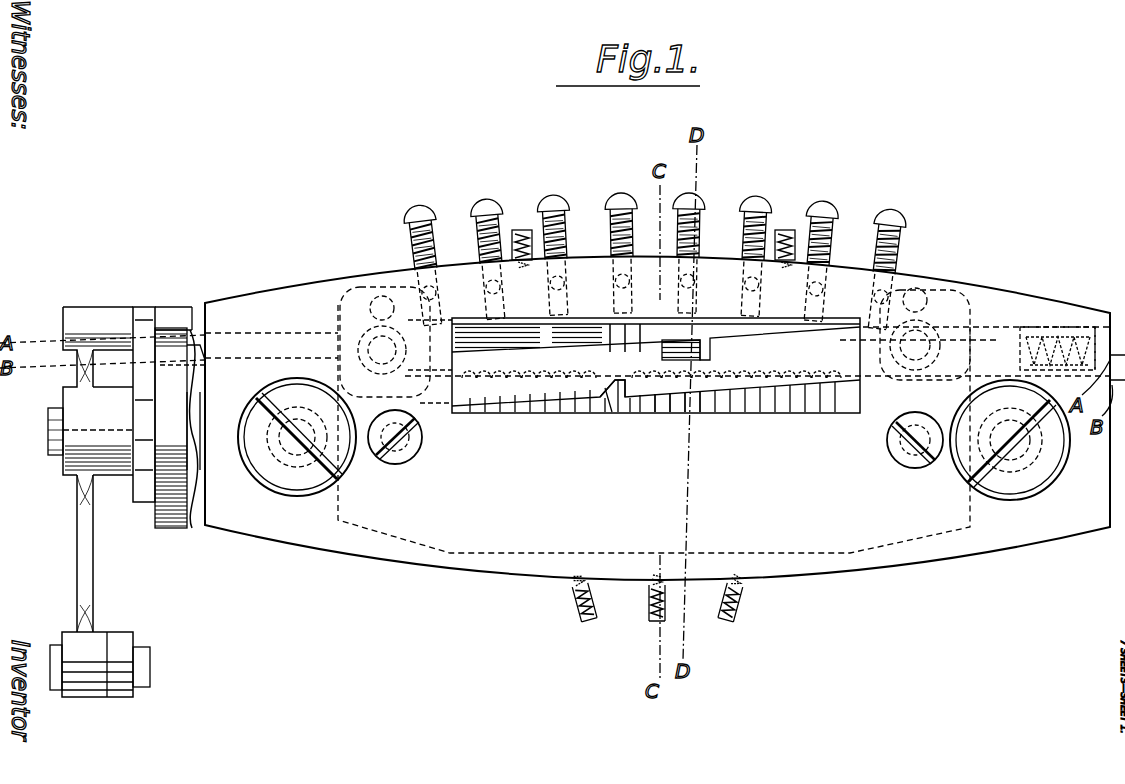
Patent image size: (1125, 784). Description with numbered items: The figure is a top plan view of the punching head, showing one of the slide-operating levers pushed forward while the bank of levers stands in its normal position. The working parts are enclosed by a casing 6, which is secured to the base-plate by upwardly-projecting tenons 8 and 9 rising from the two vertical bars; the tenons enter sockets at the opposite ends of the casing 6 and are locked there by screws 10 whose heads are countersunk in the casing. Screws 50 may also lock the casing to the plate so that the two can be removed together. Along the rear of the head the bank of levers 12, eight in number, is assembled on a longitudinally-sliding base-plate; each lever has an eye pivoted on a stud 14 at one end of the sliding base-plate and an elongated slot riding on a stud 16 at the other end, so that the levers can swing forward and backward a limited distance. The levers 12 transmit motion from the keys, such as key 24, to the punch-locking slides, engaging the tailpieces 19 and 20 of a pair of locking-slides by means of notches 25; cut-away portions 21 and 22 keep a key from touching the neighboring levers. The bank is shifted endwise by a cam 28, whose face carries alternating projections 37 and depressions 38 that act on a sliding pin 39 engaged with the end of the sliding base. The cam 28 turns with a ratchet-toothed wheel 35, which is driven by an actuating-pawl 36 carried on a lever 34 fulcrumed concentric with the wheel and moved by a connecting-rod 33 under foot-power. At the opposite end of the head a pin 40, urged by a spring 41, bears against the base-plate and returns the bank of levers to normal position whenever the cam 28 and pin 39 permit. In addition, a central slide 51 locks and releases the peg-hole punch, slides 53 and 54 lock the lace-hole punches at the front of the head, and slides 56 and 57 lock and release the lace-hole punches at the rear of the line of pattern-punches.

The casing 6 is at (562, 418).
The tenon 8 is at (300, 470).
The tenon 9 is at (1020, 465).
The screws 10 is at (275, 470).
The slide-operating levers 12 is at (656, 365).
The stud 14 is at (918, 372).
The stud 16 is at (340, 326).
The tailpiece 19 is at (661, 412).
The tailpiece 20 is at (690, 410).
The cut-away portion 21 is at (704, 350).
The cut-away portion 22 is at (556, 341).
The key 24 is at (698, 210).
The notch 25 is at (620, 410).
The cam 28 is at (174, 330).
The connecting-rod 33 is at (124, 646).
The lever 34 is at (94, 588).
The ratchet-toothed wheel 35 is at (133, 423).
The actuating-pawl 36 is at (140, 318).
The projections 37 is at (205, 360).
The depressions 38 is at (192, 408).
The sliding pin 39 is at (196, 340).
The pin 40 is at (1098, 345).
The spring 41 is at (1045, 328).
The screws 50 is at (905, 460).
The central slide 51 is at (645, 628).
The slide 53 is at (583, 618).
The slide 54 is at (725, 624).
The slide 56 is at (521, 236).
The slide 57 is at (786, 242).